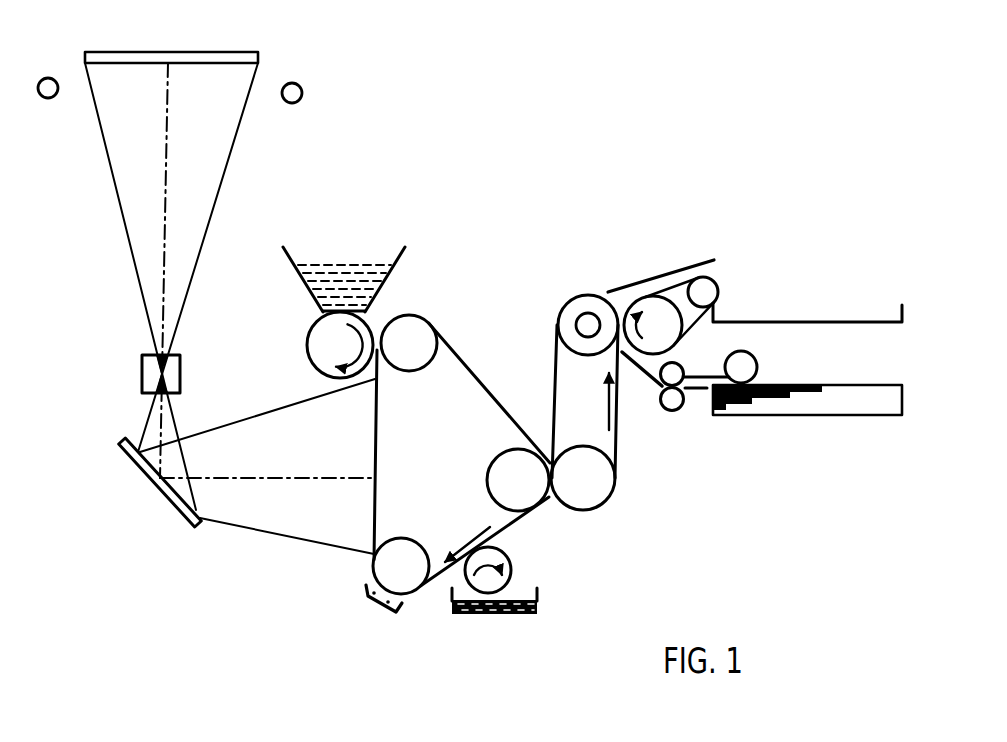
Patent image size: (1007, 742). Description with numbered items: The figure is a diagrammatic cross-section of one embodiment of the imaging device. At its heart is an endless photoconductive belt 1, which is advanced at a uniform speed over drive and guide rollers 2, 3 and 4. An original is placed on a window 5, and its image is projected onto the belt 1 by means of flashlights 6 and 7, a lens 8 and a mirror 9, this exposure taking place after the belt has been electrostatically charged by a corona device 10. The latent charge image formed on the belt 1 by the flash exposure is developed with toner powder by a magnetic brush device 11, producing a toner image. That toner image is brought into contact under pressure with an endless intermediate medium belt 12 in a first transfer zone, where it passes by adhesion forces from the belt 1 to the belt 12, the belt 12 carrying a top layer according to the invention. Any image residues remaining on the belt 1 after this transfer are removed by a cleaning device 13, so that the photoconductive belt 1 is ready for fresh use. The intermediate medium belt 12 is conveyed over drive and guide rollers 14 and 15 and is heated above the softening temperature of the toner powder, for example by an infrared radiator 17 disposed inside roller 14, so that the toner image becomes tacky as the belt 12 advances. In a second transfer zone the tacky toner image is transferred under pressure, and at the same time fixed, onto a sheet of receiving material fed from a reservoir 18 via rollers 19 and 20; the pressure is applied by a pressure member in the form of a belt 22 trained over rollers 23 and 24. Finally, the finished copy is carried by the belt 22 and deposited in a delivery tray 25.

The endless photoconductive belt 1 is at (455, 351).
The drive and guide roller 2 is at (416, 316).
The drive and guide roller 3 is at (383, 569).
The drive and guide roller 4 is at (502, 466).
The window 5 is at (112, 52).
The flashlight 6 is at (55, 78).
The flashlight 7 is at (296, 83).
The lens 8 is at (142, 373).
The mirror 9 is at (145, 476).
The corona device 10 is at (365, 603).
The magnetic brush device 11 is at (312, 303).
The endless intermediate medium belt 12 is at (617, 448).
The cleaning device 13 is at (537, 604).
The drive and guide roller 14 is at (574, 307).
The drive and guide roller 15 is at (575, 498).
The infrared radiator 17 is at (558, 322).
The reservoir 18 is at (820, 382).
The roller 19 is at (679, 410).
The roller 20 is at (684, 367).
The pressure member belt 22 is at (655, 305).
The roller 23 is at (707, 283).
The roller 24 is at (650, 305).
The delivery tray 25 is at (818, 318).